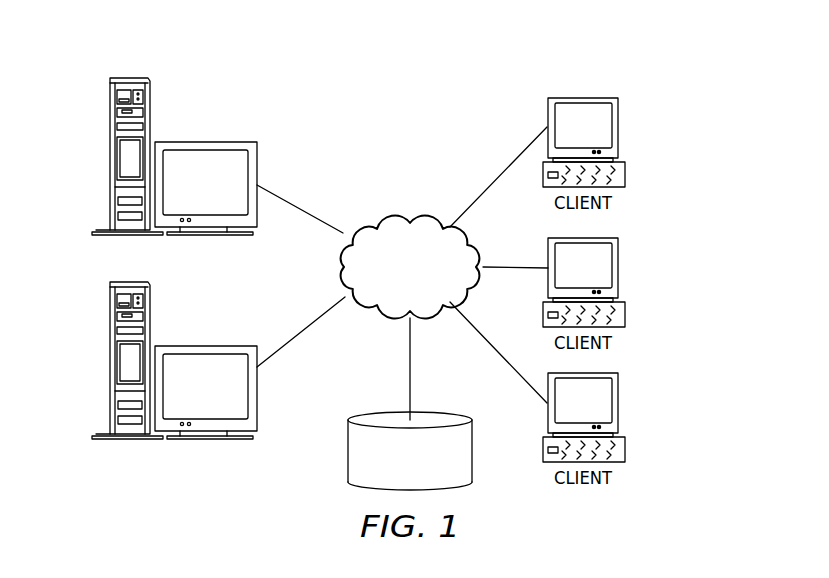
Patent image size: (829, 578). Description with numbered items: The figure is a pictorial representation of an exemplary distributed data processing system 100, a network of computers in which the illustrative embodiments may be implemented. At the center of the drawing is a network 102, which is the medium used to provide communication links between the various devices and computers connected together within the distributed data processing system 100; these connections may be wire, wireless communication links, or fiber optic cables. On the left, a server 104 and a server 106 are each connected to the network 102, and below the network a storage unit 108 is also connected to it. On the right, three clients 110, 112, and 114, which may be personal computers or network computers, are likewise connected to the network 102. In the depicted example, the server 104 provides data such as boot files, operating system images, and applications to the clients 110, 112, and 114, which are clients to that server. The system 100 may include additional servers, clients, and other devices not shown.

The distributed data processing system 100 is at (460, 92).
The network 102 is at (383, 220).
The server 104 is at (110, 155).
The server 106 is at (110, 363).
The storage unit 108 is at (348, 450).
The client 110 is at (620, 128).
The client 112 is at (620, 268).
The client 114 is at (620, 403).